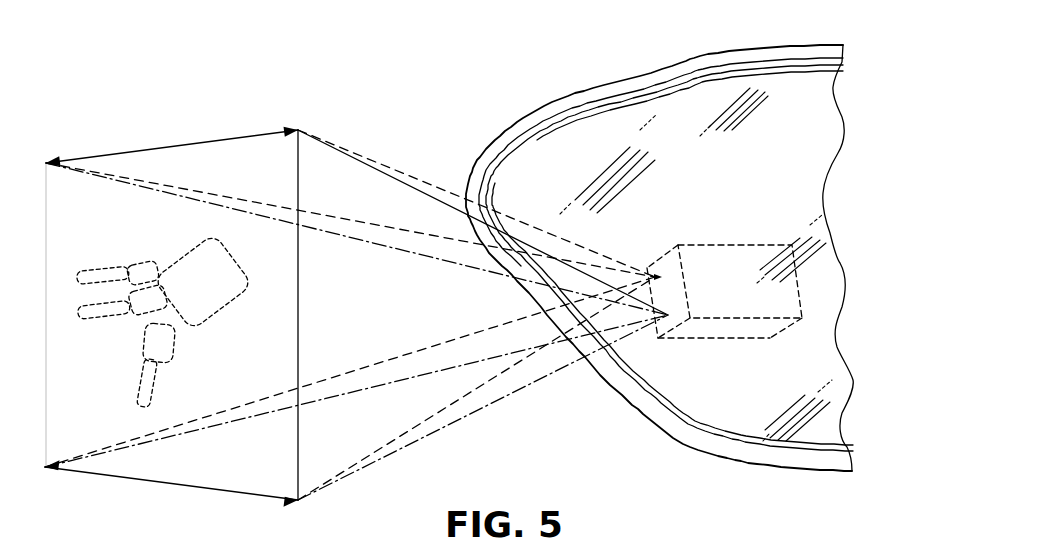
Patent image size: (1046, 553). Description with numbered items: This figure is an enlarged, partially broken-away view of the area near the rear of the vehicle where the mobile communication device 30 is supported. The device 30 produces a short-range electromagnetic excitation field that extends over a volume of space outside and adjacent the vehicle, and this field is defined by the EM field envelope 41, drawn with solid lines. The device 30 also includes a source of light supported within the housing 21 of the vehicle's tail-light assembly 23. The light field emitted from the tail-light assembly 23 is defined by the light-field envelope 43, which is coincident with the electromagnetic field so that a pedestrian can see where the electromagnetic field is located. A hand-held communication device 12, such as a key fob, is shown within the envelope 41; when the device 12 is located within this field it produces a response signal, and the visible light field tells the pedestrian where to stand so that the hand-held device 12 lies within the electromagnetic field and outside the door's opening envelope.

The hand-held communication device 12 is at (250, 316).
The housing 21 is at (717, 73).
The tail-light assembly 23 is at (588, 88).
The mobile communication device 30 is at (722, 245).
The EM field envelope 41 is at (177, 146).
The light-field envelope 43 is at (410, 173).